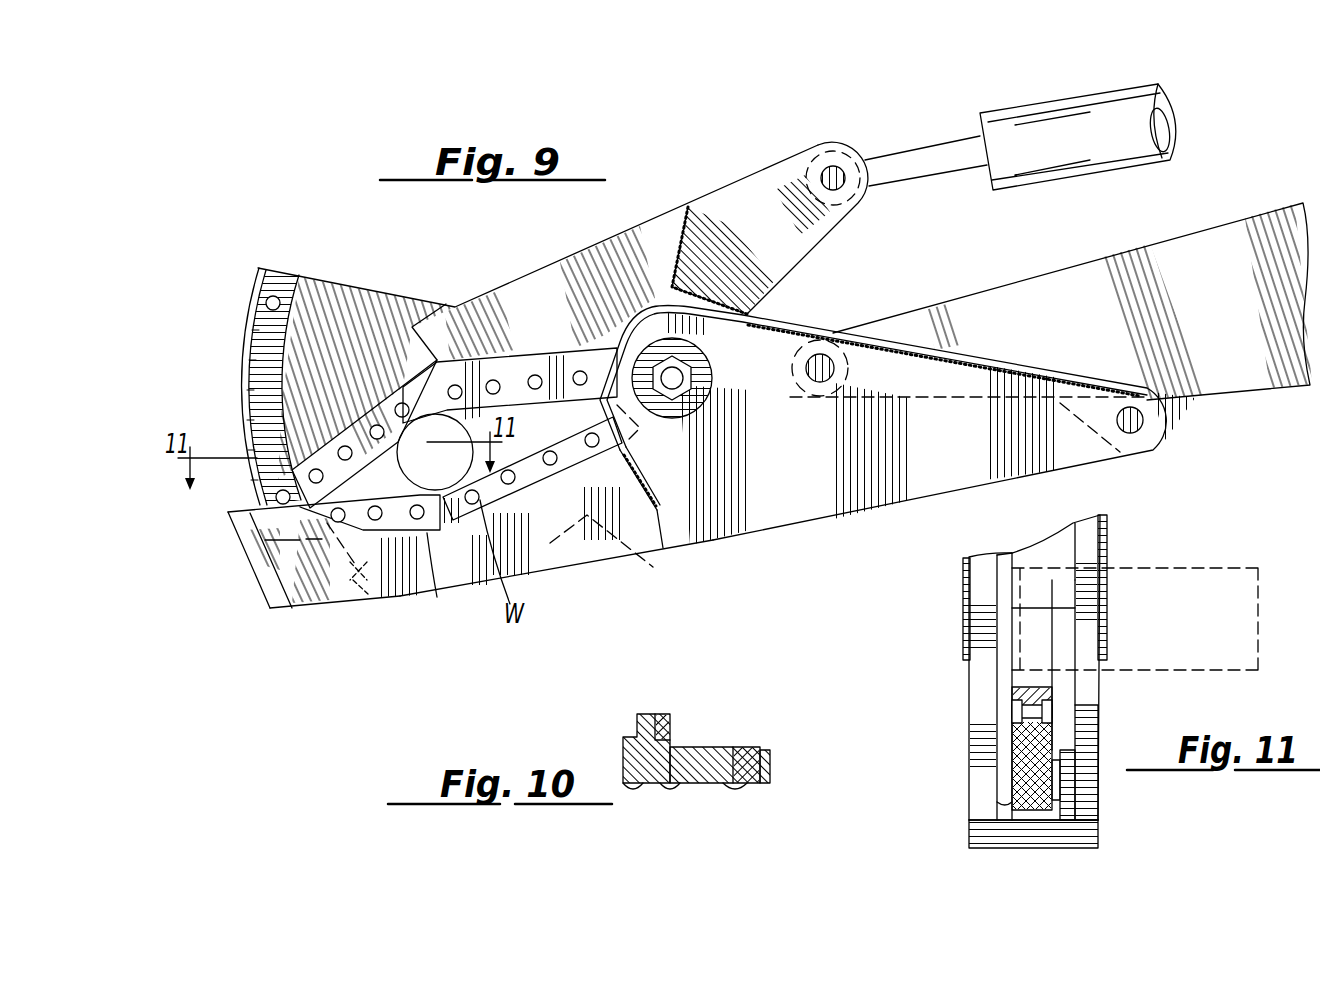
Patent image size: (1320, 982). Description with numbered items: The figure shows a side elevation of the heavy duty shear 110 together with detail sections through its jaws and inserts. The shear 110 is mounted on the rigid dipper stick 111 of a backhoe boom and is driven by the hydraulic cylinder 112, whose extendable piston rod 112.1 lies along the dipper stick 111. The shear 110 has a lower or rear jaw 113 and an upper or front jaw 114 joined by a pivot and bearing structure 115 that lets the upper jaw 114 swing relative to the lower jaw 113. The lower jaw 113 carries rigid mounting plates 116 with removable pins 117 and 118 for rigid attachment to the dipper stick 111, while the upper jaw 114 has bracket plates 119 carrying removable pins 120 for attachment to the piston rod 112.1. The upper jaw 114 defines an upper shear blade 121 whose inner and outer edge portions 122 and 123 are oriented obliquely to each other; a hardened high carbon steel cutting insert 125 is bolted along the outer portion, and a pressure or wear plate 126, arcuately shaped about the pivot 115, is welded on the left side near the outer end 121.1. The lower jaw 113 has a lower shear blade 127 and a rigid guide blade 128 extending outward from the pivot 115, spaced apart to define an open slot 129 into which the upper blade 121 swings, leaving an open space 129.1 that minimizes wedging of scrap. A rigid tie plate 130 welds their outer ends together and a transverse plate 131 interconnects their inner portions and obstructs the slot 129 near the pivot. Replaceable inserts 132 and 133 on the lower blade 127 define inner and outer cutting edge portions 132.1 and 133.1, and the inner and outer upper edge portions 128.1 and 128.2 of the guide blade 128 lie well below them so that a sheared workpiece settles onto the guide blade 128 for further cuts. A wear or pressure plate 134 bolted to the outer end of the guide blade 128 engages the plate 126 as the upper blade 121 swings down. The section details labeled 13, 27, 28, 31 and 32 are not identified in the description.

In FIG. 9, the heavy duty shear 110 is at (318, 240).
In FIG. 9, the dipper stick 111 is at (1198, 248).
In FIG. 9, the hydraulic cylinder 112 is at (1125, 105).
In FIG. 9, the extendable piston rod 112.1 is at (905, 165).
In FIG. 9, the lower or rear jaw 113 is at (378, 600).
In FIG. 11, the lower or rear jaw 113 is at (1100, 813).
In FIG. 9, the upper or front jaw 114 is at (363, 292).
In FIG. 9, the pivot and bearing structure 115 is at (694, 385).
In FIG. 9, the mounting plates 116 is at (877, 498).
In FIG. 9, the removable pin 117 is at (826, 358).
In FIG. 9, the removable pin 118 is at (1145, 430).
In FIG. 9, the bracket plates 119 is at (735, 195).
In FIG. 9, the removable pins 120 is at (836, 165).
In FIG. 9, the upper shear blade 121 is at (300, 405).
In FIG. 11, the upper shear blade 121 is at (1013, 763).
In FIG. 9, the outer end of upper shear blade 121.1 is at (247, 303).
In FIG. 9, the inner edge portion 122 is at (512, 410).
In FIG. 9, the outer edge portion 123 is at (377, 460).
In FIG. 11, the hardened cutting insert 125 is at (1010, 693).
In FIG. 9, the pressure plate or wear plate 126 is at (258, 353).
In FIG. 9, the lower shear blade 127 is at (437, 597).
In FIG. 11, the lower shear blade 127 is at (978, 743).
In FIG. 9, the guide blade 128 is at (337, 600).
In FIG. 11, the guide blade 128 is at (1087, 720).
In FIG. 9, the inner upper edge portion of guide blade 128.1 is at (528, 483).
In FIG. 9, the outer upper edge portion of guide blade 128.2 is at (488, 550).
In FIG. 11, the open slot 129 is at (1020, 673).
In FIG. 11, the open space 129.1 is at (1063, 692).
In FIG. 9, the tie plate 130 is at (267, 583).
In FIG. 11, the tie plate 130 is at (970, 837).
In FIG. 9, the transverse rigid plate 131 is at (630, 547).
In FIG. 11, the transverse rigid plate 131 is at (1057, 547).
In FIG. 9, the inner replaceable insert 132 is at (538, 505).
In FIG. 11, the inner replaceable insert 132 is at (1000, 603).
In FIG. 9, the inner cutting edge portion 132.1 is at (563, 440).
In FIG. 9, the outer replaceable insert 133 is at (418, 573).
In FIG. 11, the outer replaceable insert 133 is at (1003, 797).
In FIG. 9, the outer cutting edge portion 133.1 is at (395, 494).
In FIG. 9, the wear or pressure plate 134 is at (345, 585).
In FIG. 11, the wear or pressure plate 134 is at (1067, 792).
In FIG. 10, the anvil insert 13 is at (700, 747).
In FIG. 10, the holder block 27 is at (635, 727).
In FIG. 10, the end piece 28 is at (750, 790).
In FIG. 10, the bottom face 31 is at (700, 787).
In FIG. 10, the notch 32 is at (658, 712).